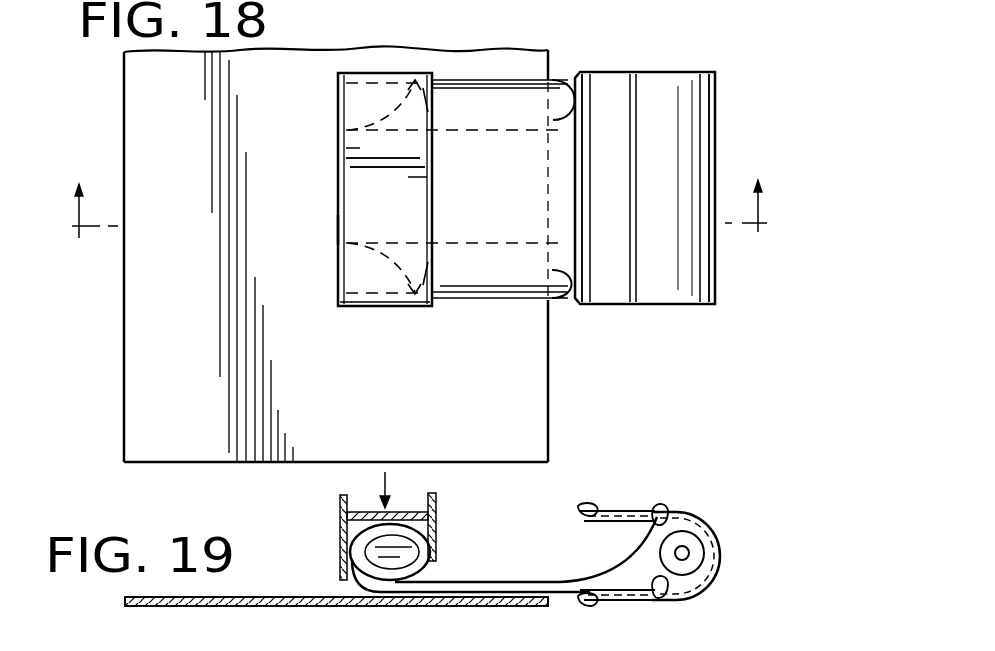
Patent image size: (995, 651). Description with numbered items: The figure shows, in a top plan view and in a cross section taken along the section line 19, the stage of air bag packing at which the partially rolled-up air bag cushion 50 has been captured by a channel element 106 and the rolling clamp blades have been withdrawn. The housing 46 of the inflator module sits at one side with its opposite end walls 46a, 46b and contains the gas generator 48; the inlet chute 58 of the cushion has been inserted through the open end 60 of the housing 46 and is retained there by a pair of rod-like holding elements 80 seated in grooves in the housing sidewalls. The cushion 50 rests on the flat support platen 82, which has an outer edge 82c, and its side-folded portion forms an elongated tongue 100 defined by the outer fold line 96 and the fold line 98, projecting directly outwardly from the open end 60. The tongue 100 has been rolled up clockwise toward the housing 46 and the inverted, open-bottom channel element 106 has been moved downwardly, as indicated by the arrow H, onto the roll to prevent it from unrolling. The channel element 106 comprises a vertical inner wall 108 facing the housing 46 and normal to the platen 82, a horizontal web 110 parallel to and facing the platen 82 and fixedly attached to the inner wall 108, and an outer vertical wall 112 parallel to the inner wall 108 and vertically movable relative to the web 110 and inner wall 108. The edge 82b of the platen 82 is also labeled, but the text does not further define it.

In FIG. 18, the section line 19— 19 is at (419, 218).
In FIG. 18, the housing 46 is at (715, 128).
In FIG. 19, the housing 46 is at (706, 522).
In FIG. 18, the end wall 46a is at (618, 70).
In FIG. 18, the end wall 46b is at (637, 305).
In FIG. 19, the gas generator 48 is at (706, 583).
In FIG. 18, the air bag cushion 50 is at (452, 306).
In FIG. 19, the air bag cushion 50 is at (440, 569).
In FIG. 18, the inlet chute 58 is at (557, 82).
In FIG. 19, the inlet chute 58 is at (632, 553).
In FIG. 18, the open end 60 is at (556, 301).
In FIG. 19, the open end 60 is at (583, 510).
In FIG. 19, the rod-like holding elements 80 is at (662, 510).
In FIG. 18, the support platen 82 is at (352, 391).
In FIG. 19, the support platen 82 is at (290, 606).
In FIG. 18, the panel bottom edge 82b is at (173, 463).
In FIG. 18, the outer edge of the support platen 82c is at (124, 400).
In FIG. 19, the outer edge of the support platen 82c is at (125, 604).
In FIG. 18, the outer fold line 96 is at (490, 79).
In FIG. 18, the fold line 98 is at (484, 301).
In FIG. 18, the tongue 100 is at (509, 212).
In FIG. 18, the channel element 106 is at (334, 211).
In FIG. 19, the channel element 106 is at (338, 521).
In FIG. 18, the inner wall 108 is at (433, 174).
In FIG. 19, the inner wall 108 is at (437, 532).
In FIG. 18, the horizontal web 110 is at (394, 205).
In FIG. 19, the horizontal web 110 is at (347, 497).
In FIG. 18, the outer vertical wall 112 is at (338, 220).
In FIG. 19, the arrow H is at (390, 492).